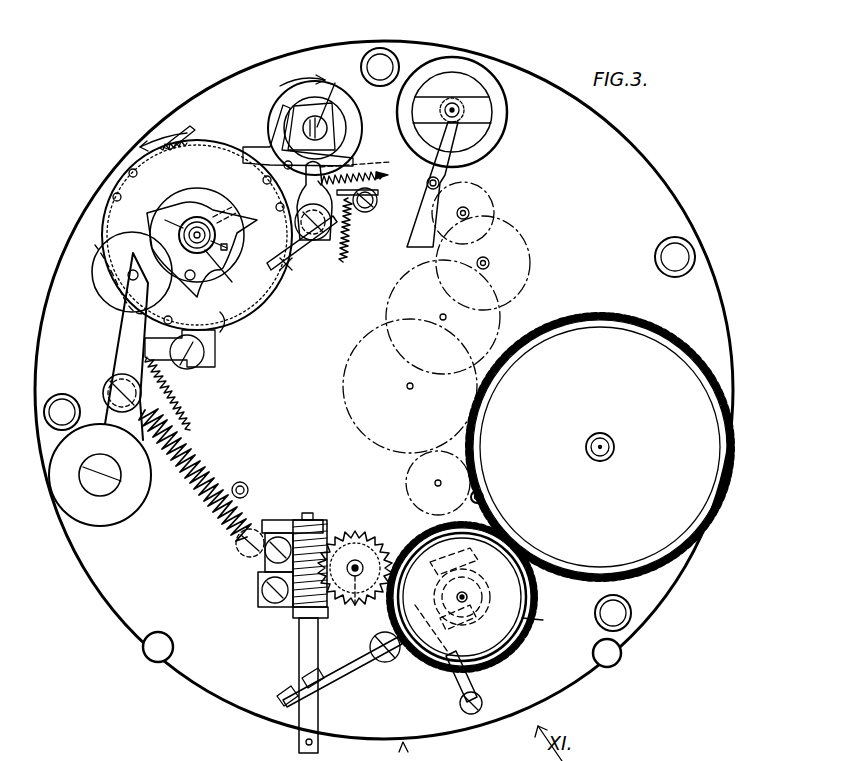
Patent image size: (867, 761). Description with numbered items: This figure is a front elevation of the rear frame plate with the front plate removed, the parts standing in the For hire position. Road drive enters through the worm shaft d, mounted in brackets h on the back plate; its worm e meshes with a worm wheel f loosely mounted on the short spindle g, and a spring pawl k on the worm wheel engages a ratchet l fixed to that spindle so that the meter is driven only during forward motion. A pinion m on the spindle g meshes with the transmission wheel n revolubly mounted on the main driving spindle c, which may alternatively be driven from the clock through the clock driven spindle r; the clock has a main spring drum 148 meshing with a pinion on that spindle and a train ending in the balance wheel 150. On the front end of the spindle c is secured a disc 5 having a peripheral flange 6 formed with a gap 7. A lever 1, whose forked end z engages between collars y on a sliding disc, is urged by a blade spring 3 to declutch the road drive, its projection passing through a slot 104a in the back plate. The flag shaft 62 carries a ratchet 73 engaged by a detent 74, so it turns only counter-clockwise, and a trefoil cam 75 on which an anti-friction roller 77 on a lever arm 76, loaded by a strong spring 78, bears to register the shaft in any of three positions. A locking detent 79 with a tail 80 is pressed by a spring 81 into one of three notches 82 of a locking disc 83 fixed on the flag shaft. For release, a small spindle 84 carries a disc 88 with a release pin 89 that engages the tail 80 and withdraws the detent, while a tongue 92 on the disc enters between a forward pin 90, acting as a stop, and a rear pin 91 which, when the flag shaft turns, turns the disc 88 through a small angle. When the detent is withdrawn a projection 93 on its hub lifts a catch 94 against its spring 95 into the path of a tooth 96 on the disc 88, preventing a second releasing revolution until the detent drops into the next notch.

The flag shaft 62 is at (221, 273).
The ratchet 73 is at (188, 130).
The detent 74 is at (206, 358).
The trefoil cam 75 is at (166, 206).
The lever arm 76 is at (112, 325).
The anti-friction roller 77 is at (93, 272).
The strong spring 78 is at (196, 436).
The locking detent 79 is at (293, 257).
The tail 80 is at (355, 157).
The spring 81 is at (370, 180).
The notches 82 is at (96, 247).
The locking disc 83 is at (224, 331).
The small spindle 84 is at (320, 94).
The disc 88 is at (360, 114).
The release pin 89 is at (288, 169).
The forward pin 90 is at (116, 194).
The rear pin 91 is at (132, 170).
The tongue 92 is at (247, 147).
The projection 93 is at (346, 224).
The catch 94 is at (361, 207).
The spring 95 is at (348, 253).
The tooth 96 is at (364, 169).
The slot 104a is at (281, 694).
The main spring drum 148 is at (600, 327).
The balance wheel 150 is at (502, 115).
The clock driven spindle r is at (481, 494).
The transmission wheel n is at (411, 546).
The main driving spindle c is at (462, 597).
The gap 7 is at (478, 540).
The forked end z is at (459, 630).
The collars y is at (478, 585).
The disc 5 is at (509, 588).
The peripheral flange 6 is at (539, 618).
The short spindle g is at (360, 558).
The spring pawl k is at (320, 538).
The worm wheel f is at (339, 533).
The ratchet l is at (350, 545).
The worm e is at (296, 619).
The brackets h is at (258, 577).
The worm shaft d is at (320, 712).
The lever 1 is at (364, 663).
The pinion m is at (378, 633).
The blade spring 3 is at (448, 689).